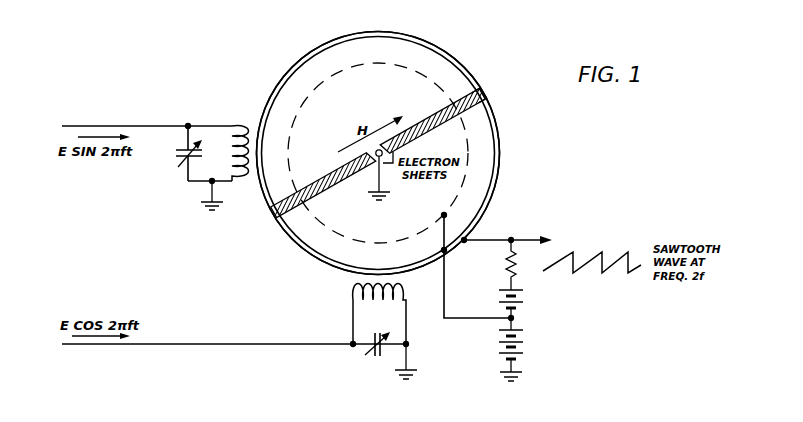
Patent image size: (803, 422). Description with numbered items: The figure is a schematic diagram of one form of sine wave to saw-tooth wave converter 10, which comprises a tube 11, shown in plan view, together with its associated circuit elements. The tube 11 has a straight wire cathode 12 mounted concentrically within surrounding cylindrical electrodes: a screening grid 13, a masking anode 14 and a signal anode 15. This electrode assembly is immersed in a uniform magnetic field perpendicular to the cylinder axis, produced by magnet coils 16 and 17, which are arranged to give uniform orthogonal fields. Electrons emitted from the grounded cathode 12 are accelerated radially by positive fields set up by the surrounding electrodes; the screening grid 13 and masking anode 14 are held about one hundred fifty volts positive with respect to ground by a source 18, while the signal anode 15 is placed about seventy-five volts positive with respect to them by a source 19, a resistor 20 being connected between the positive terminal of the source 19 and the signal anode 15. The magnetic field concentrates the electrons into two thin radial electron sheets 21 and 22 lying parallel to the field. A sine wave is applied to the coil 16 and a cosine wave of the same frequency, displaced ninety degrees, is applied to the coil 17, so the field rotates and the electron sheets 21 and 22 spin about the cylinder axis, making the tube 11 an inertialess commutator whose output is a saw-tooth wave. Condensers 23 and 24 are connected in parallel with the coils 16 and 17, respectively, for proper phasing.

The sine wave to saw-tooth wave converter 10 is at (387, 20).
The tube 11 is at (413, 35).
The straight wire cathode 12 is at (375, 153).
The screening grid 13 is at (418, 70).
The masking anode 14 is at (462, 68).
The signal anode 15 is at (478, 88).
The magnet coil 16 is at (231, 128).
The magnet coil 17 is at (355, 292).
The source 18 is at (525, 347).
The source 19 is at (525, 302).
The resistor 20 is at (505, 266).
The electron sheet 21 is at (320, 191).
The electron sheet 22 is at (436, 113).
The condenser 23 is at (184, 153).
The condenser 24 is at (376, 357).